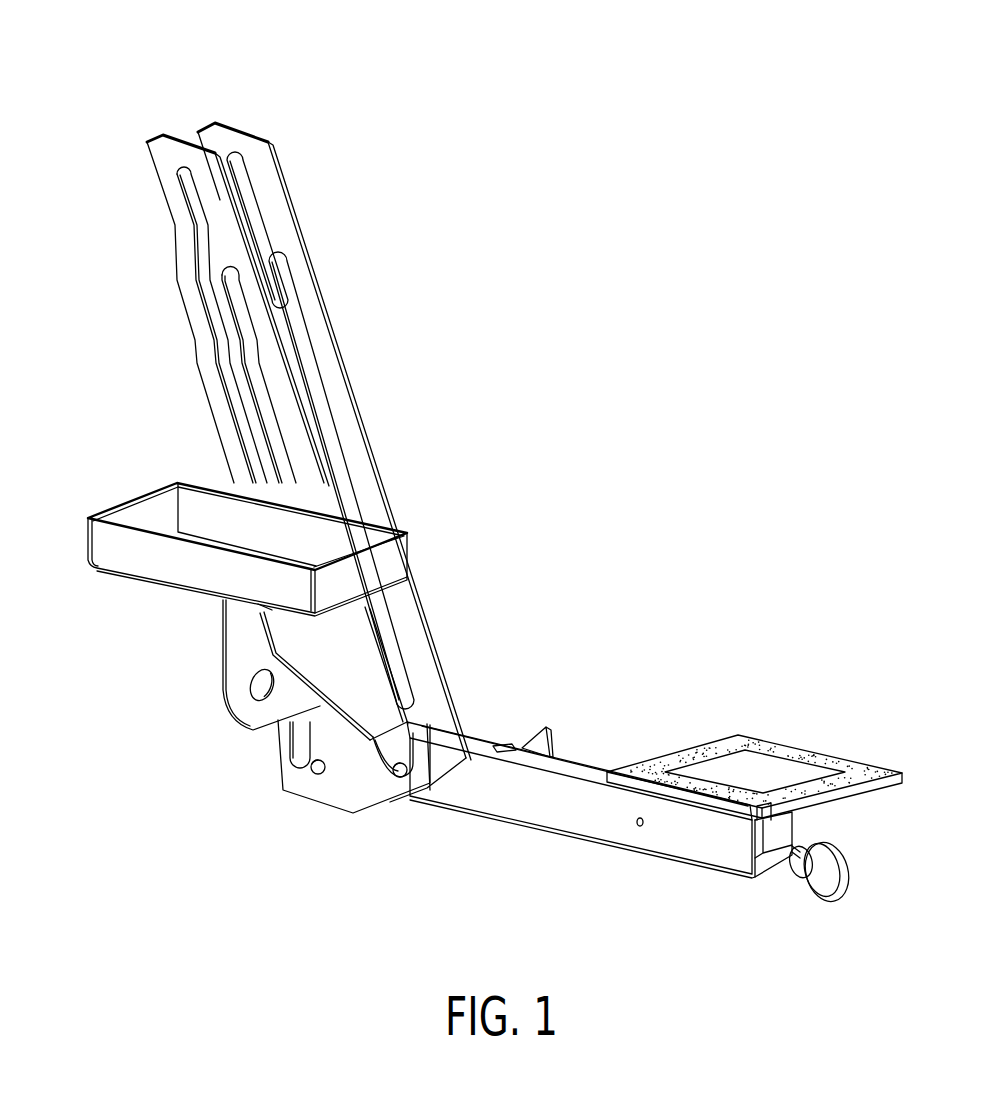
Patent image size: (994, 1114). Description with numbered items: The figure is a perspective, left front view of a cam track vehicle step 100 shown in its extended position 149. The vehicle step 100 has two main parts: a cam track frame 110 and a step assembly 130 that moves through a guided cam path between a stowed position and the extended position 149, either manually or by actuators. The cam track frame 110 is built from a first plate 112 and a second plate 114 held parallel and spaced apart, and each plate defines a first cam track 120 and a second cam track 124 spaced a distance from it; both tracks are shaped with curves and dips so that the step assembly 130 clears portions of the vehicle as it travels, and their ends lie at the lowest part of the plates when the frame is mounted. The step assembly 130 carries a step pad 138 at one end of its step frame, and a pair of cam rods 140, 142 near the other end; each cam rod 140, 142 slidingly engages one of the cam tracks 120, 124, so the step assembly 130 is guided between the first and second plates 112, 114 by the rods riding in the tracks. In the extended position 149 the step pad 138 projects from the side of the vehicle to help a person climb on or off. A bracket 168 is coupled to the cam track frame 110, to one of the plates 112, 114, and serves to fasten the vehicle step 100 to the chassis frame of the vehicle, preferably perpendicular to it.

The cam track vehicle step 100 is at (565, 86).
The cam track frame 110 is at (126, 178).
The first plate 112 is at (180, 250).
The second plate 114 is at (250, 140).
The first cam track 120 is at (216, 368).
The second cam track 124 is at (272, 440).
The step assembly 130 is at (598, 860).
The step pad 138 is at (757, 768).
The cam rod 140 is at (316, 771).
The cam rod 142 is at (398, 774).
The extended position 149 is at (779, 616).
The bracket 168 is at (293, 636).